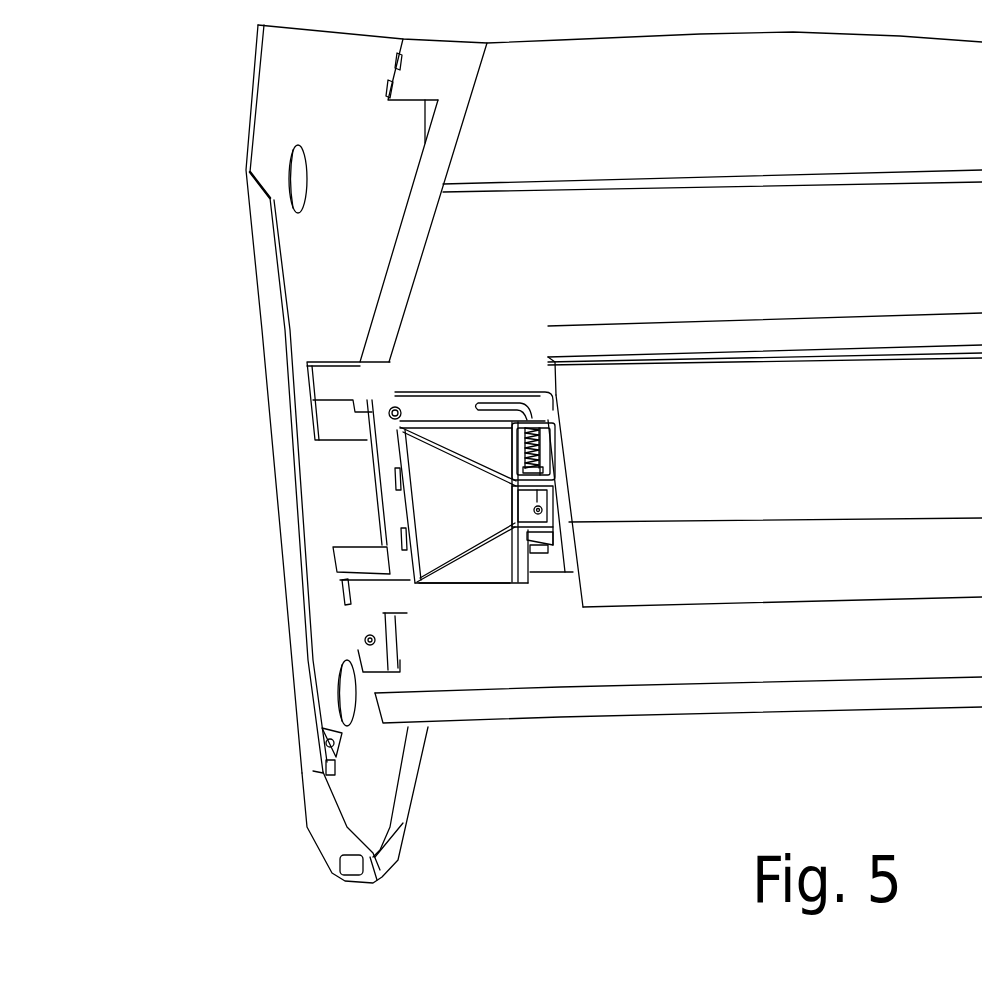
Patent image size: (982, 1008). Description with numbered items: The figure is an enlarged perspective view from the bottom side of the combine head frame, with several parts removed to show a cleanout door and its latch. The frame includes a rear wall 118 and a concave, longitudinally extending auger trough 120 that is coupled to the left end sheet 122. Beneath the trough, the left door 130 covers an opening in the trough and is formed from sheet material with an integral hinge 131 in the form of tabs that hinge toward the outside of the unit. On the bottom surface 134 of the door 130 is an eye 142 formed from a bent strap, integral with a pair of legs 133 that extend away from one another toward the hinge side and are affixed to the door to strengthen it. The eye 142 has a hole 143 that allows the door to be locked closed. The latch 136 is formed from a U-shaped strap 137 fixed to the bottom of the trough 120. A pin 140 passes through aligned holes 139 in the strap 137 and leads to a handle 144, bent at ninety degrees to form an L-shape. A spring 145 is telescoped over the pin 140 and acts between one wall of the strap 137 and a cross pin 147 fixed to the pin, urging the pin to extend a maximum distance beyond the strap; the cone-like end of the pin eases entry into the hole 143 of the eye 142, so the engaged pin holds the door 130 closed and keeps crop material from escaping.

The rear wall 118 is at (760, 141).
The auger trough 120 is at (867, 462).
The left end sheet 122 is at (265, 247).
The left door 130 is at (477, 497).
The integral hinge 131 is at (397, 480).
The legs 133 is at (437, 443).
The bottom surface 134 is at (473, 547).
The latch 136 is at (580, 428).
The U-shaped strap 137 is at (556, 395).
The aligned holes 139 is at (545, 413).
The pin 140 is at (556, 488).
The eye 142 is at (573, 543).
The hole 143 is at (545, 548).
The handle 144 is at (487, 403).
The spring 145 is at (567, 450).
The cross pin 147 is at (553, 453).